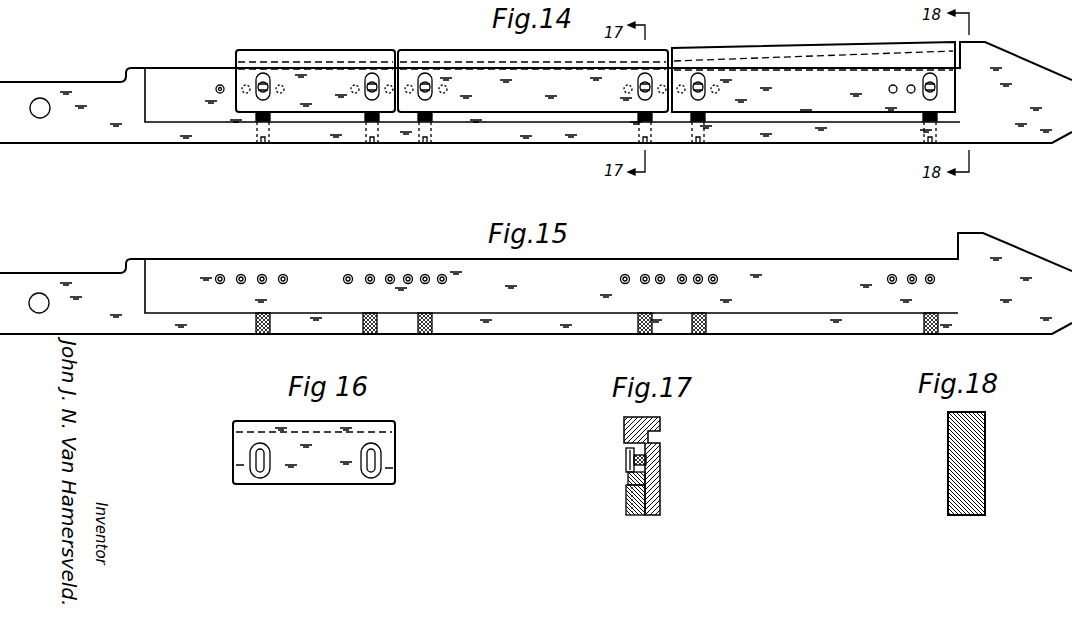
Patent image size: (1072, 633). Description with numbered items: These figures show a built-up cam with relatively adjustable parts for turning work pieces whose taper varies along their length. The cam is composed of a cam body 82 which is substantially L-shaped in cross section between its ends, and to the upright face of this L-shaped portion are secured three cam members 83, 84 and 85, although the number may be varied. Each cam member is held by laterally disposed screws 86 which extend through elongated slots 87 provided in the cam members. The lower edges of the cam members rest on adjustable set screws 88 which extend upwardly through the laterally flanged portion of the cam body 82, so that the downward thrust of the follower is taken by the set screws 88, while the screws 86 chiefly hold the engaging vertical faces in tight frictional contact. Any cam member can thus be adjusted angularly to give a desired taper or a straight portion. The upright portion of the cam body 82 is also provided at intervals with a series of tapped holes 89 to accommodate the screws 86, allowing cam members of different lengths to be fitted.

In FIG. 14, the cam body 82 is at (521, 137).
In FIG. 15, the cam body 82 is at (553, 326).
In FIG. 17, the cam body 82 is at (660, 484).
In FIG. 18, the cam body 82 is at (948, 456).
In FIG. 14, the cam member 83 is at (775, 47).
In FIG. 14, the cam member 84 is at (433, 50).
In FIG. 14, the cam member 85 is at (306, 50).
In FIG. 17, the laterally disposed screw 86 is at (660, 462).
In FIG. 16, the elongated slot 87 is at (372, 458).
In FIG. 17, the elongated slot 87 is at (626, 476).
In FIG. 14, the adjustable set screw 88 is at (265, 144).
In FIG. 15, the adjustable set screw 88 is at (597, 323).
In FIG. 17, the adjustable set screw 88 is at (638, 516).
In FIG. 15, the tapped hole 89 is at (716, 272).